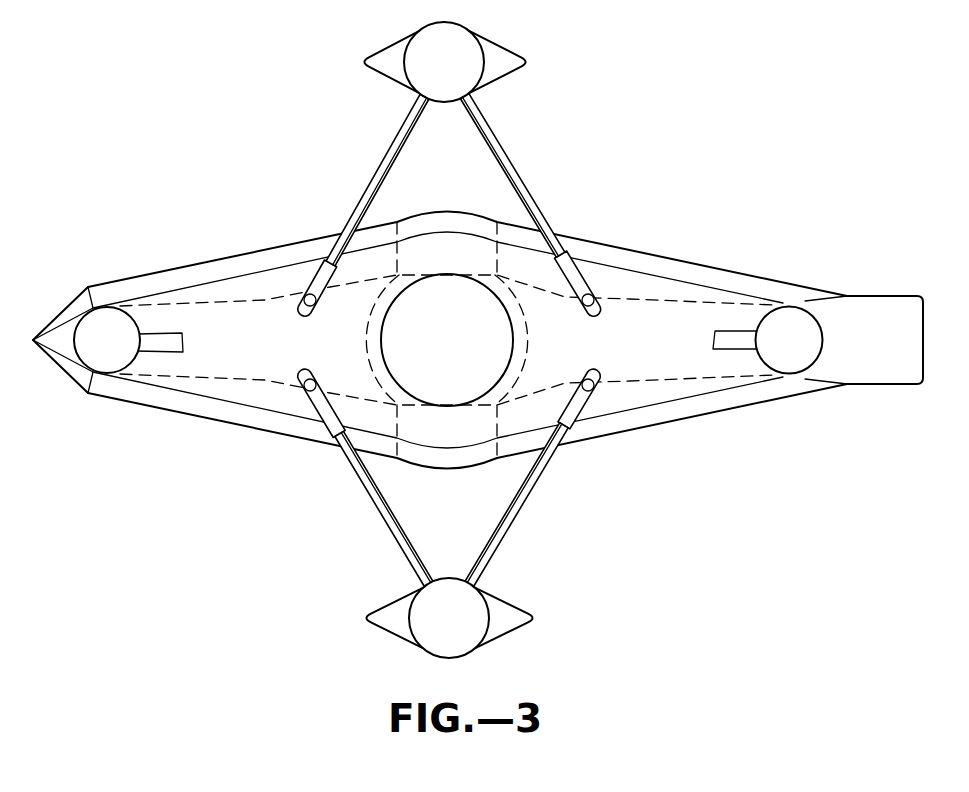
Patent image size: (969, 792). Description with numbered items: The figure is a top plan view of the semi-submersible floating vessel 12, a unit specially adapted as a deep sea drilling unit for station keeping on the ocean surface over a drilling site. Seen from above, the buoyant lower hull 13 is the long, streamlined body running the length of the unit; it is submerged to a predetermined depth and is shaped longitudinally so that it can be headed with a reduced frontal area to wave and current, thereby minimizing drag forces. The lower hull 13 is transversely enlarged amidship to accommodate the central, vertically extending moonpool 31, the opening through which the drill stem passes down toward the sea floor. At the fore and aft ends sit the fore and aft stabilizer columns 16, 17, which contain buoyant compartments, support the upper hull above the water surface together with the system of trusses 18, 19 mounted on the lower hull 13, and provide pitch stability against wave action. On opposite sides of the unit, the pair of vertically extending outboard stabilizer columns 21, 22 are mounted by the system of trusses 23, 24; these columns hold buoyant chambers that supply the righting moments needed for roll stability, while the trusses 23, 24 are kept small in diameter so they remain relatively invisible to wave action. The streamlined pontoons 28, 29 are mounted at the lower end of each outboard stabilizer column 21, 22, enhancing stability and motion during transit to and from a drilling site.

The semi-submersible floating vessel 12 is at (648, 181).
The lower hull 13 is at (671, 256).
The fore stabilizer column 16 is at (128, 331).
The aft stabilizer column 17 is at (778, 329).
The truss 18 is at (174, 347).
The truss 19 is at (729, 347).
The outboard stabilizer column 21 is at (478, 62).
The outboard stabilizer column 22 is at (475, 608).
The truss 23 is at (387, 519).
The truss 24 is at (527, 183).
The pontoon 28 is at (394, 40).
The pontoon 29 is at (387, 637).
The moonpool 31 is at (392, 375).